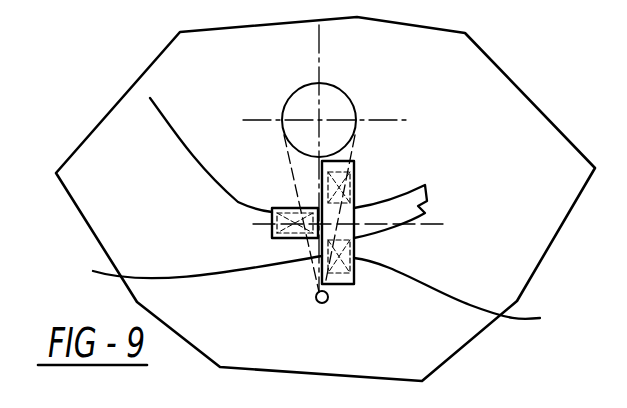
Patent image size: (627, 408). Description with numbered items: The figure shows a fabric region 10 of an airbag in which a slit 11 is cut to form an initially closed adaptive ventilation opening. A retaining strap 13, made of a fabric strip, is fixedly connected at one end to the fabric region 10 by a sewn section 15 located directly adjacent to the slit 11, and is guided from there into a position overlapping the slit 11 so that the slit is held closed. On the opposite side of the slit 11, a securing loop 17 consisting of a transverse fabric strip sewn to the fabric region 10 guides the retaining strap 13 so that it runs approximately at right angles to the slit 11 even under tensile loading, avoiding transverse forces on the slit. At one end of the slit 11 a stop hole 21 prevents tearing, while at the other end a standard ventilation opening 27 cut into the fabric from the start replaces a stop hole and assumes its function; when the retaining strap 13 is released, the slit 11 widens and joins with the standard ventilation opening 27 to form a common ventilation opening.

The fabric region 10 is at (485, 118).
The slit 11 is at (198, 266).
The retaining strap 13 is at (408, 204).
The sewn section 15 is at (150, 98).
The securing loop 17 is at (459, 296).
The stop hole 21 is at (327, 302).
The standard ventilation opening 27 is at (330, 100).